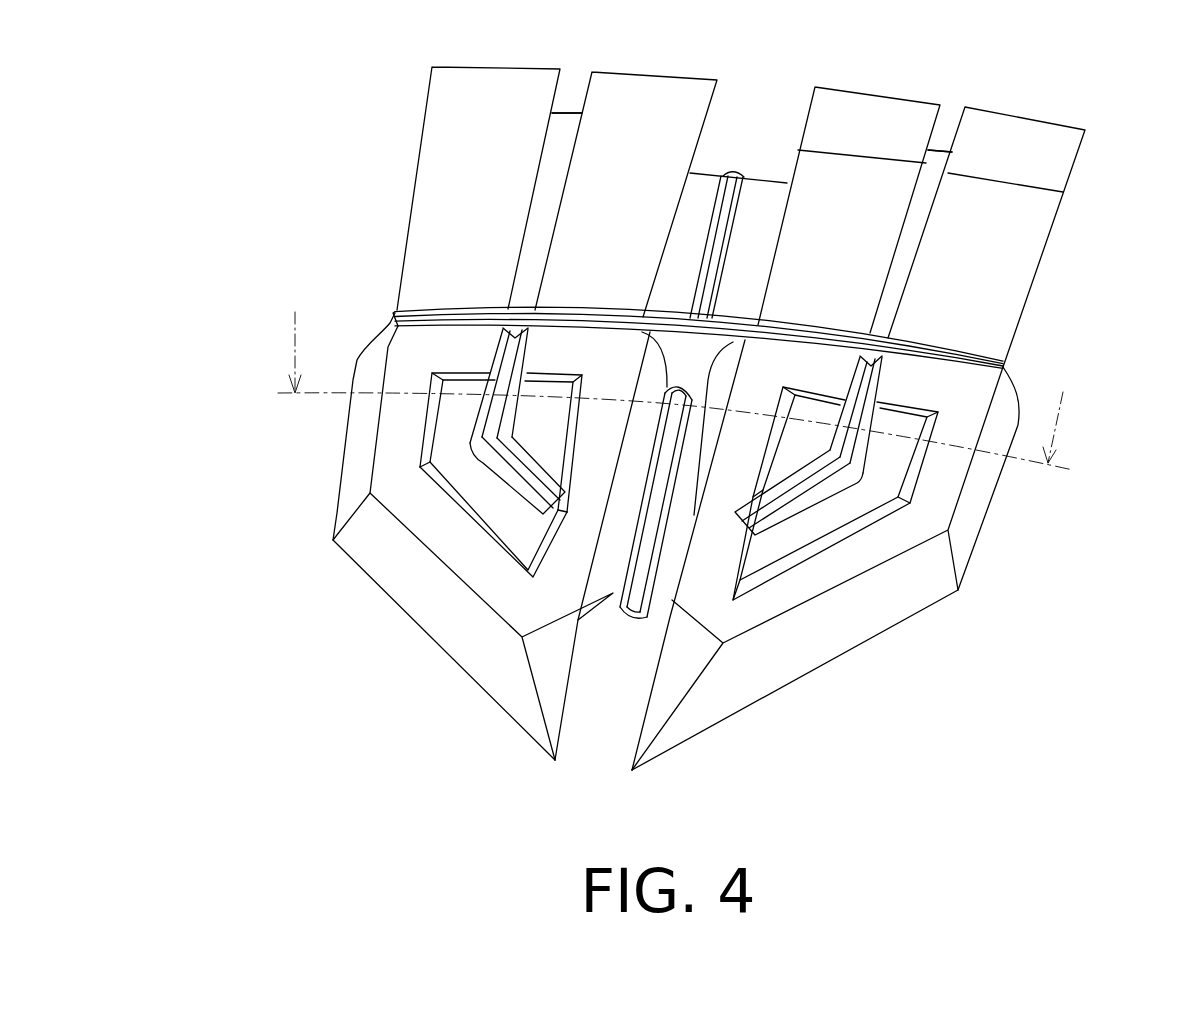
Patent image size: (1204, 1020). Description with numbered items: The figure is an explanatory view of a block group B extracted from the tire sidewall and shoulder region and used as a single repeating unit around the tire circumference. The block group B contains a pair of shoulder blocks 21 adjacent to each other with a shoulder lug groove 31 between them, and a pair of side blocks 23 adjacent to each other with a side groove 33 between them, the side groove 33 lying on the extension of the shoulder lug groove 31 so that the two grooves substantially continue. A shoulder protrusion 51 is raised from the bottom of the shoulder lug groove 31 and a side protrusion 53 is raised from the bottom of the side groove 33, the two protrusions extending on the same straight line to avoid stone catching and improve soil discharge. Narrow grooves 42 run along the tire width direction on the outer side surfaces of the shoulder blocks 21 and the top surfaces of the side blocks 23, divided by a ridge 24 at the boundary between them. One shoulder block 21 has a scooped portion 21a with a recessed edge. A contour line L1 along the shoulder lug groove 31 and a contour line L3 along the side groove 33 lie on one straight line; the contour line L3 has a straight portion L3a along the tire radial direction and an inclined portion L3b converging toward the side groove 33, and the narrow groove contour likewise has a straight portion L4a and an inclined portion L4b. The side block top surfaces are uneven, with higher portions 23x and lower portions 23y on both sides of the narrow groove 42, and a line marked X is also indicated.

The block group B is at (1100, 100).
The contour line L1 is at (413, 185).
The shoulder block 21 is at (998, 245).
The scooped portion 21a is at (1045, 158).
The narrow groove 42 is at (525, 318).
The shoulder lug groove 31 is at (765, 173).
The shoulder protrusion 51 is at (729, 176).
The ridge 24 is at (1005, 365).
The side block 23 is at (893, 592).
The portion with relatively high raised height 23x is at (813, 435).
The portion with relatively low raised height 23y is at (702, 573).
The side groove 33 is at (615, 638).
The side protrusion 53 is at (632, 622).
The contour line L3 is at (642, 353).
The straight portion L3a is at (545, 415).
The inclined portion L3b is at (430, 523).
The straight portion L4a is at (540, 432).
The inclined portion L4b is at (487, 493).
The axis X is at (675, 379).